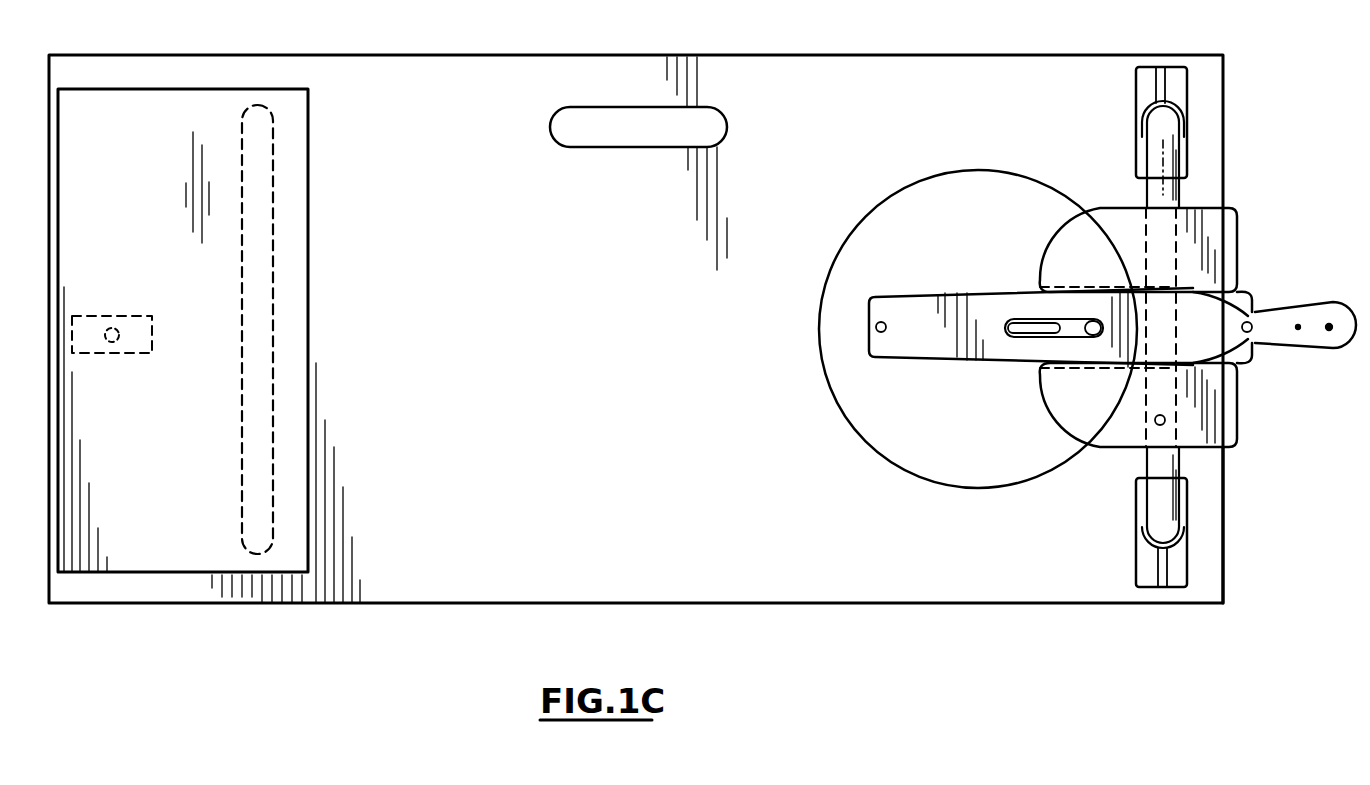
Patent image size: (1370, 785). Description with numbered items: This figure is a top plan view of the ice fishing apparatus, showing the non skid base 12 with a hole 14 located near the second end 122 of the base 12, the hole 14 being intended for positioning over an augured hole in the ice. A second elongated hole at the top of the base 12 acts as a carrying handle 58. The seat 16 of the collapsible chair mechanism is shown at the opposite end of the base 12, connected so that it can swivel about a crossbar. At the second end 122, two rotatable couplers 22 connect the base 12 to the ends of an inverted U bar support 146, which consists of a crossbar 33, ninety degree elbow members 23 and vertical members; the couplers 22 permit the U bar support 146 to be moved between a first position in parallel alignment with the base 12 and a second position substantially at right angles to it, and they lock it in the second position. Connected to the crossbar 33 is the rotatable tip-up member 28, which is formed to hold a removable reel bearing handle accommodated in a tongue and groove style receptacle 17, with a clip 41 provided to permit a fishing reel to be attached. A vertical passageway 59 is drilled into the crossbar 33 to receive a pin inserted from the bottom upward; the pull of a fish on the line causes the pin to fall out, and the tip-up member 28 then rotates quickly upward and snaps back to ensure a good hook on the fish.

The non skid base 12 is at (560, 580).
The hole 14 is at (955, 271).
The seat 16 is at (205, 351).
The tongue and groove style receptacle 17 is at (1256, 310).
The rotatable couplers 22 is at (1178, 85).
The elbow members 23 is at (1162, 157).
The tip-up member 28 is at (1122, 428).
The crossbar 33 is at (1163, 185).
The clip 41 is at (1098, 300).
The carrying handle 58 is at (637, 107).
The vertical passageway 59 is at (1165, 425).
The second end 122 is at (1225, 527).
The U bar support 146 is at (1155, 120).